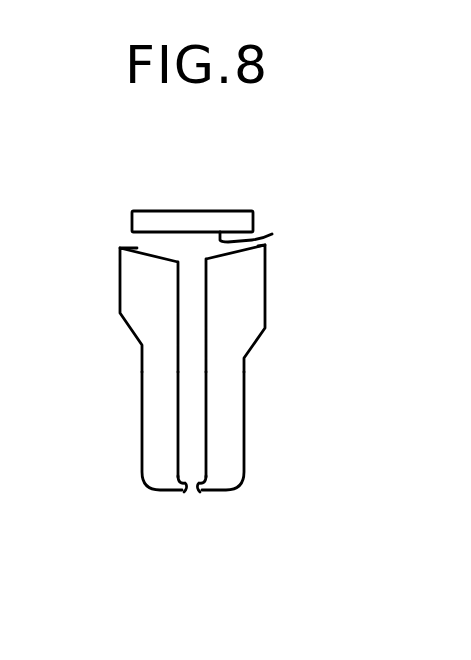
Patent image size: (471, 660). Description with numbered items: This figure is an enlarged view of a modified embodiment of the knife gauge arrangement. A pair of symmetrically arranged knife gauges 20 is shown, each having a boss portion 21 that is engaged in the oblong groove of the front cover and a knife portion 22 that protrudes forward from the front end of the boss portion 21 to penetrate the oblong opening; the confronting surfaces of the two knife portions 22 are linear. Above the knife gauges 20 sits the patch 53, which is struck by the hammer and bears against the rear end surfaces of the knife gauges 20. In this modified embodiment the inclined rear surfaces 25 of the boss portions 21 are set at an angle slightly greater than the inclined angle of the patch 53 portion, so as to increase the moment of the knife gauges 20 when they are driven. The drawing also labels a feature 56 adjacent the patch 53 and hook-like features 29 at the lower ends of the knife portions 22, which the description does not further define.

The knife gauge 20 is at (312, 337).
The boss portion 21 is at (140, 283).
The knife portion 22 is at (157, 397).
The rear surface 25 is at (137, 248).
The inwardly bent hook at lower end of arm 29 is at (184, 492).
The patch 53 is at (200, 218).
The tab on cross plate 56 is at (272, 234).